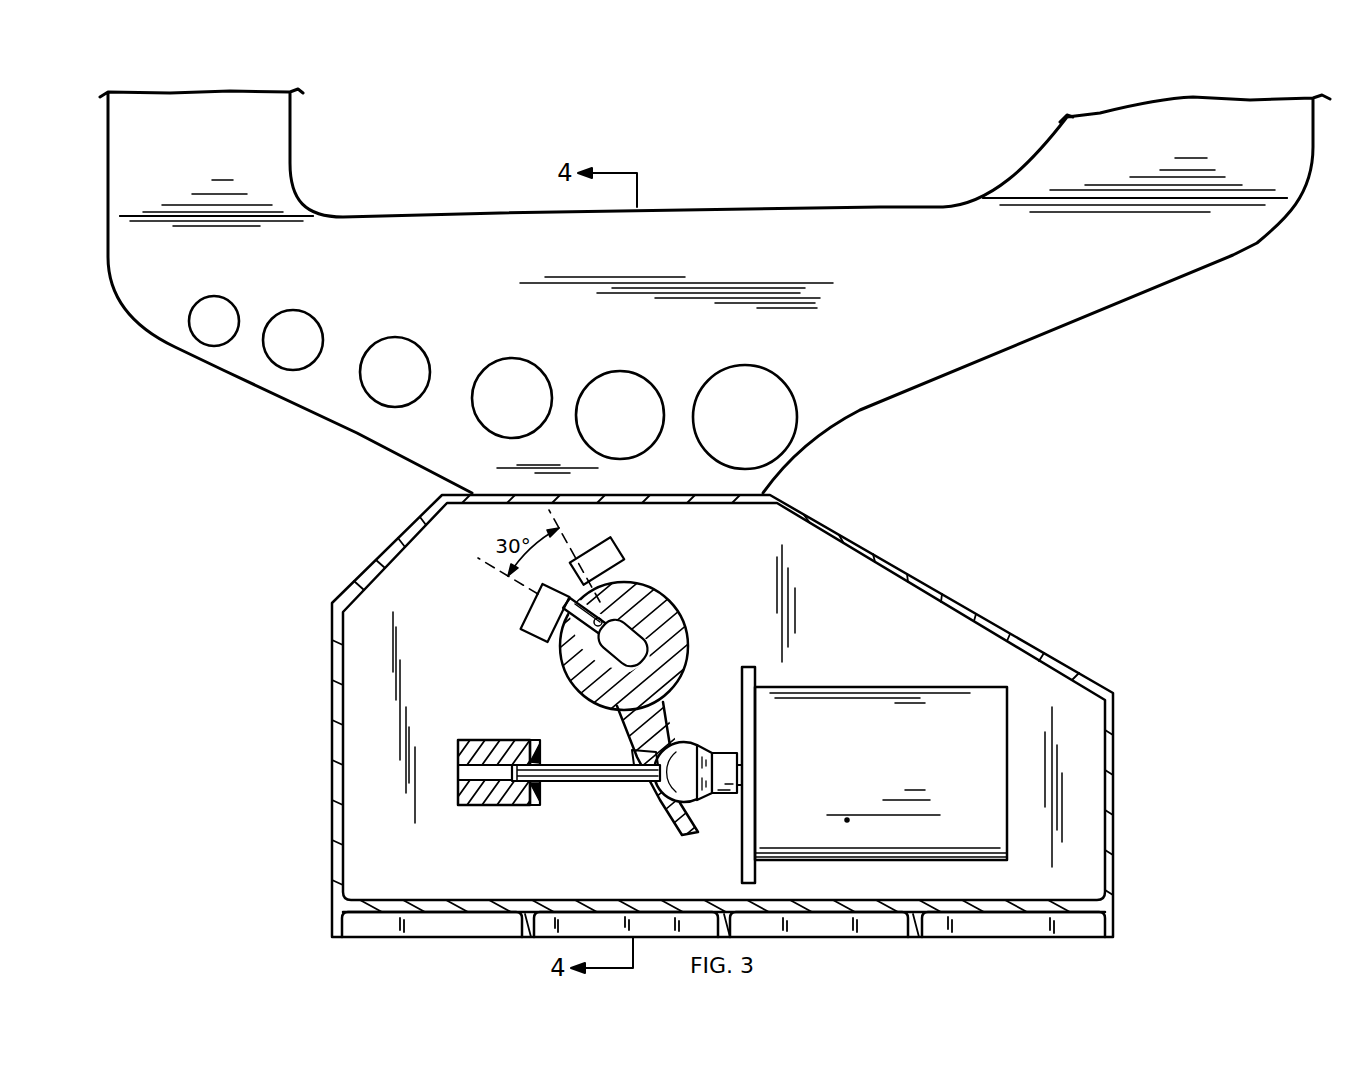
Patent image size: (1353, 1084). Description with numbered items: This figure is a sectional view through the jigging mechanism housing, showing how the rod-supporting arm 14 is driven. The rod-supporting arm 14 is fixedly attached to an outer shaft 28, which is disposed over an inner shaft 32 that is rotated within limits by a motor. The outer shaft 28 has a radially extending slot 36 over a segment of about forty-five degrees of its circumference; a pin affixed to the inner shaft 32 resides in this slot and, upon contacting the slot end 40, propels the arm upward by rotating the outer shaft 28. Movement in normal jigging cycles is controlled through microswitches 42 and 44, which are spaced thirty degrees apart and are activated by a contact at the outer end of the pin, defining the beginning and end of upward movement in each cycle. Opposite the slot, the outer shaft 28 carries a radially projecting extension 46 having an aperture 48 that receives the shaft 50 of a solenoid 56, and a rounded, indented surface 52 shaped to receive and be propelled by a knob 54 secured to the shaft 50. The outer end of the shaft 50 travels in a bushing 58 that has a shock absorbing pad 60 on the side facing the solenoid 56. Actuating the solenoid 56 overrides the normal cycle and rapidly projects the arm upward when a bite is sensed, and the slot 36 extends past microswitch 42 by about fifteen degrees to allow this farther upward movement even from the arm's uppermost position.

The rod-supporting arm 14 is at (862, 408).
The outer shaft 28 is at (677, 610).
The inner shaft 32 is at (648, 642).
The radially extending slot 36 is at (580, 650).
The slot end 40 is at (612, 605).
The microswitch 42 is at (524, 612).
The microswitch 44 is at (620, 556).
The radially projecting extension 46 is at (677, 717).
The aperture 48 is at (640, 760).
The shaft 50 is at (597, 782).
The rounded indented surface 52 is at (655, 798).
The ball 54 is at (690, 745).
The solenoid 56 is at (843, 794).
The bushing 58 is at (495, 805).
The shock absorbing pad 60 is at (542, 750).